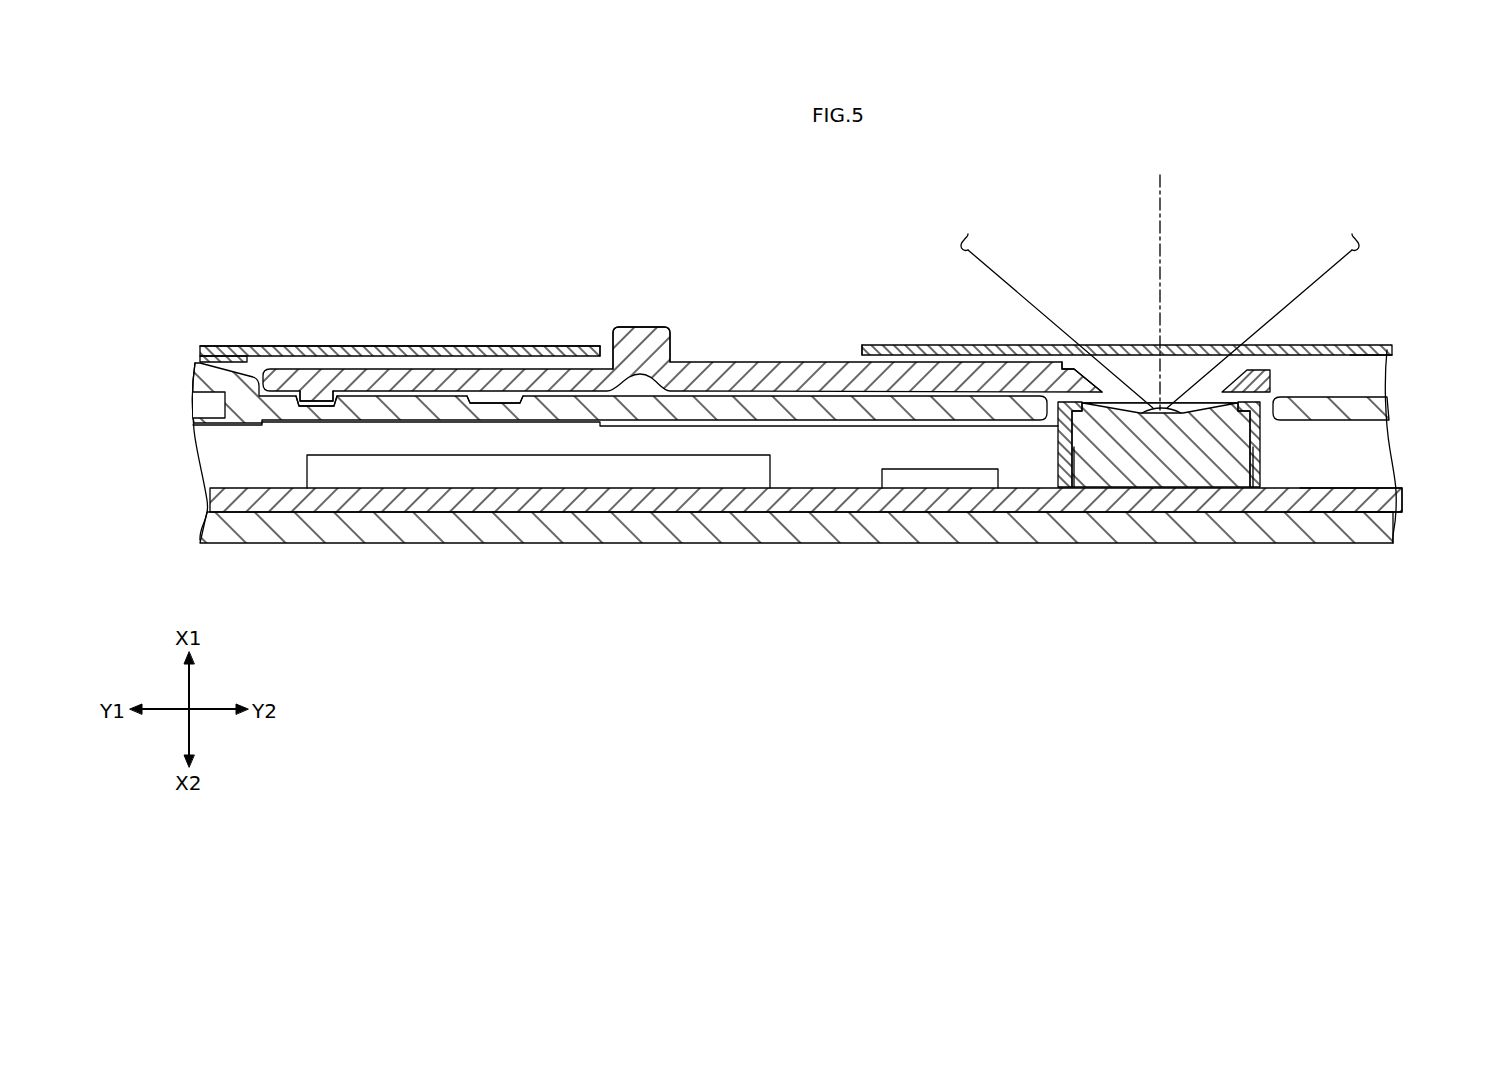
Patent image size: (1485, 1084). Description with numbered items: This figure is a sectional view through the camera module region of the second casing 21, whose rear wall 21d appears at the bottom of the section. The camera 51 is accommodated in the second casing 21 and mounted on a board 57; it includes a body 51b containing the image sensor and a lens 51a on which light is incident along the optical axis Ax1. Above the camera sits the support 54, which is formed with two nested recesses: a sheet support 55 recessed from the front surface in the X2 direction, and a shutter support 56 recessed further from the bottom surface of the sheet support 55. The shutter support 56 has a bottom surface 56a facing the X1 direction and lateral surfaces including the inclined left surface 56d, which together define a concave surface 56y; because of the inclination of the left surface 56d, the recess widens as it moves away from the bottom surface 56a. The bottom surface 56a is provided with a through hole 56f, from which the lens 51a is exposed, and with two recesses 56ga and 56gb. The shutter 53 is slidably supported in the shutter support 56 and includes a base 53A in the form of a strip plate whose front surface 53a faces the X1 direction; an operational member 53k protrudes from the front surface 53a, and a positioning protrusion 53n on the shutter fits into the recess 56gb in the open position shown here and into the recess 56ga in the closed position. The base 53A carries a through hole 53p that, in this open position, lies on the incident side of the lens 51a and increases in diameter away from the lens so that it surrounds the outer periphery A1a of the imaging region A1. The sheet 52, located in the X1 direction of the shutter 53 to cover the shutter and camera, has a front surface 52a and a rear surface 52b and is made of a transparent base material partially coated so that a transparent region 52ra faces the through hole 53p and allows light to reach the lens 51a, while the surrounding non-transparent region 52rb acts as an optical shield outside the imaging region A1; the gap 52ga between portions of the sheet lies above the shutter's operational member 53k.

The sheet support 55 is at (381, 302).
The left surface 56d is at (252, 356).
The non-transparent region 52rb is at (462, 345).
The operational member 53k is at (640, 327).
The shutter 53 is at (690, 430).
The base 53A is at (682, 364).
The front surface 53a is at (730, 362).
The opening of housing 52ga is at (818, 350).
The imaging region A1 is at (1114, 321).
The outer periphery of imaging region A1a is at (990, 272).
The through hole 53p is at (1118, 367).
The camera 51 is at (1164, 363).
The lens 51a is at (1170, 410).
The transparent region 52ra is at (1358, 345).
The sheet 52 is at (1034, 311).
The front surface 52a is at (1127, 350).
The rear surface 52b is at (1378, 360).
The through hole 56f is at (1268, 400).
The positioning protrusion 53n is at (318, 398).
The recess 56gb is at (350, 405).
The recess 56ga is at (527, 403).
The support 54 is at (806, 496).
The shutter support 56 is at (619, 484).
The bottom surface 56a is at (806, 500).
The concave surface 56y is at (806, 500).
The body 51b is at (1213, 470).
The second casing 21 is at (796, 564).
The rear wall 21d is at (1295, 543).
The board 57 is at (1358, 500).
The optical axis Ax1 is at (1163, 192).